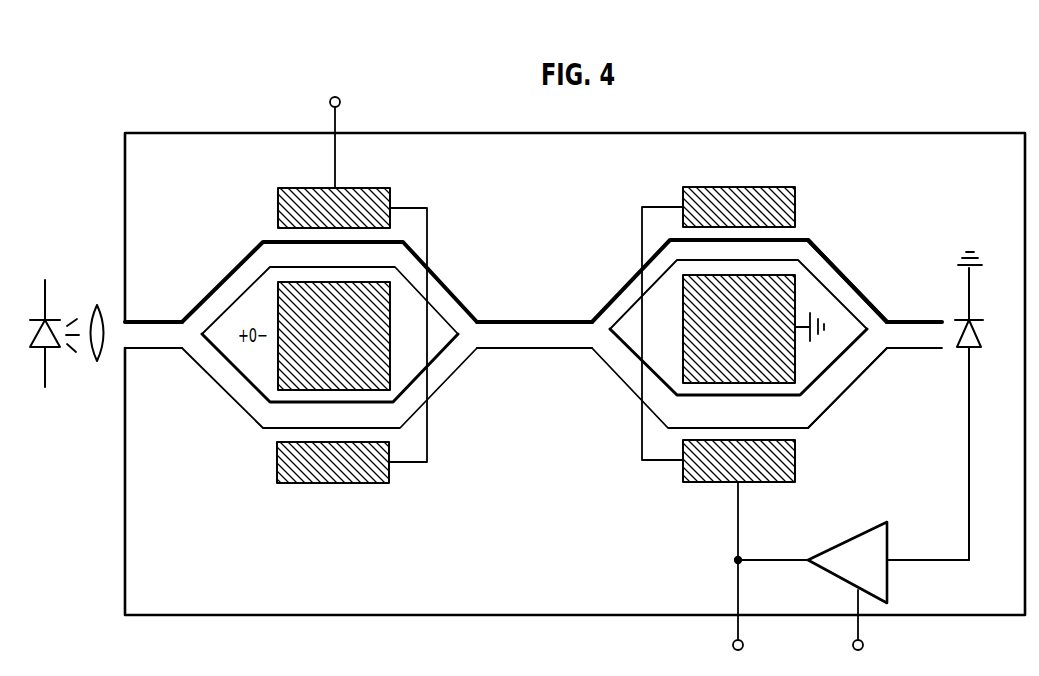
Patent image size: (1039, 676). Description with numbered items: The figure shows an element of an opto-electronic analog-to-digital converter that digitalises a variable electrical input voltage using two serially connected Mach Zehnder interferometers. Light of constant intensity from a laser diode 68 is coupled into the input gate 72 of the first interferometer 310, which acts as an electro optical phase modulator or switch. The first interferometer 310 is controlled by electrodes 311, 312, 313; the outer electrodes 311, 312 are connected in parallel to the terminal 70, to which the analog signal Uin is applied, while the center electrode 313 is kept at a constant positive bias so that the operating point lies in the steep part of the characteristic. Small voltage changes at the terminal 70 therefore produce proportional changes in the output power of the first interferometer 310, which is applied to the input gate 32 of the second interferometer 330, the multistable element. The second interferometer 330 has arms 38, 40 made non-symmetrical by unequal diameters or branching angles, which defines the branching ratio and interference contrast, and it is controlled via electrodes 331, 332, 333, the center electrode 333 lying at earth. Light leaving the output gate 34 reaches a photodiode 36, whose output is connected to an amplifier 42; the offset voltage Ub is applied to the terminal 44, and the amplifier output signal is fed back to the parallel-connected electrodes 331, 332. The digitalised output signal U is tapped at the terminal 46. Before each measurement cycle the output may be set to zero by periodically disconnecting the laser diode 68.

The input gate 32 is at (547, 343).
The output gate 34 is at (923, 326).
The photodiode 36 is at (981, 339).
The interferometer arm 38 is at (842, 387).
The interferometer arm 40 is at (820, 265).
The amplifier 42 is at (881, 537).
The terminal 44 is at (852, 645).
The terminal 46 is at (732, 645).
The laser diode 68 is at (51, 349).
The terminal 70 is at (329, 103).
The input gate 72 is at (159, 344).
The first interferometer 310 is at (224, 408).
The electrode 311 is at (391, 194).
The electrode 312 is at (365, 480).
The center electrode 313 is at (284, 297).
The second interferometer 330 is at (612, 383).
The electrode 331 is at (796, 197).
The electrode 332 is at (796, 462).
The electrode 333 is at (797, 298).